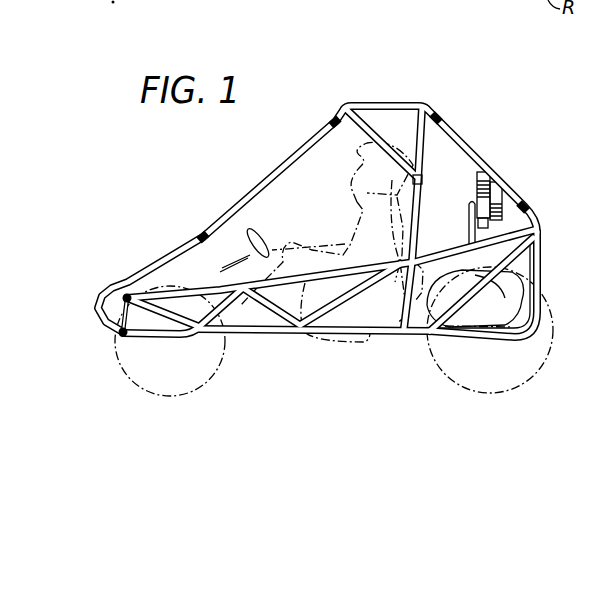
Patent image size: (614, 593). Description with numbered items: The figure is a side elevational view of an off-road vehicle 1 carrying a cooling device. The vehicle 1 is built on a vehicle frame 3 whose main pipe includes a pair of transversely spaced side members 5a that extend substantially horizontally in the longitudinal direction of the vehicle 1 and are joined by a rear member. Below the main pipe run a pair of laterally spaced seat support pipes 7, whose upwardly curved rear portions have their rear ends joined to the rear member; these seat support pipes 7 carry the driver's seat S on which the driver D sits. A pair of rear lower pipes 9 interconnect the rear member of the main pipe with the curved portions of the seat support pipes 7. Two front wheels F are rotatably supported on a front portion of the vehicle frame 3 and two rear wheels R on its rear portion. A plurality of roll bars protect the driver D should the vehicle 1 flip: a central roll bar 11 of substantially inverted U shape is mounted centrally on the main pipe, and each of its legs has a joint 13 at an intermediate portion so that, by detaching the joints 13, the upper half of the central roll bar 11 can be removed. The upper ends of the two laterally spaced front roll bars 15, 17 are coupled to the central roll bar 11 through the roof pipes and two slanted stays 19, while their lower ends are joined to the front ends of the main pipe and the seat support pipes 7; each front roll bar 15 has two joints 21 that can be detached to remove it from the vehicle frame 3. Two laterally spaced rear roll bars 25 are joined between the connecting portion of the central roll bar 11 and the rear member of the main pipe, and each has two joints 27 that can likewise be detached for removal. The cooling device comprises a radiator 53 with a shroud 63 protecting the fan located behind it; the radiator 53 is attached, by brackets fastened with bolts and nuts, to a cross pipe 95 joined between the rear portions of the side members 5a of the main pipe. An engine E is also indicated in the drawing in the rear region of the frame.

The off-road vehicle 1 is at (535, 138).
The vehicle frame 3 is at (162, 254).
The side member 5a is at (308, 332).
The seat support pipe 7 is at (258, 330).
The rear lower pipe 9 is at (538, 300).
The central roll bar 11 is at (428, 150).
The joint 13 is at (432, 172).
The front roll bar 15 is at (283, 160).
The front roll bar 17 is at (401, 106).
The slanted stay 19 is at (382, 107).
The joint 21 is at (203, 236).
The rear roll bar 25 is at (488, 165).
The joint 27 is at (438, 117).
The radiator 53 is at (502, 185).
The shroud 63 is at (540, 230).
The cross pipe 95 is at (470, 232).
The driver D is at (348, 232).
The engine E is at (497, 292).
The front wheel F is at (120, 372).
The driver's seat S is at (388, 314).
The rear wheel R is at (541, 371).